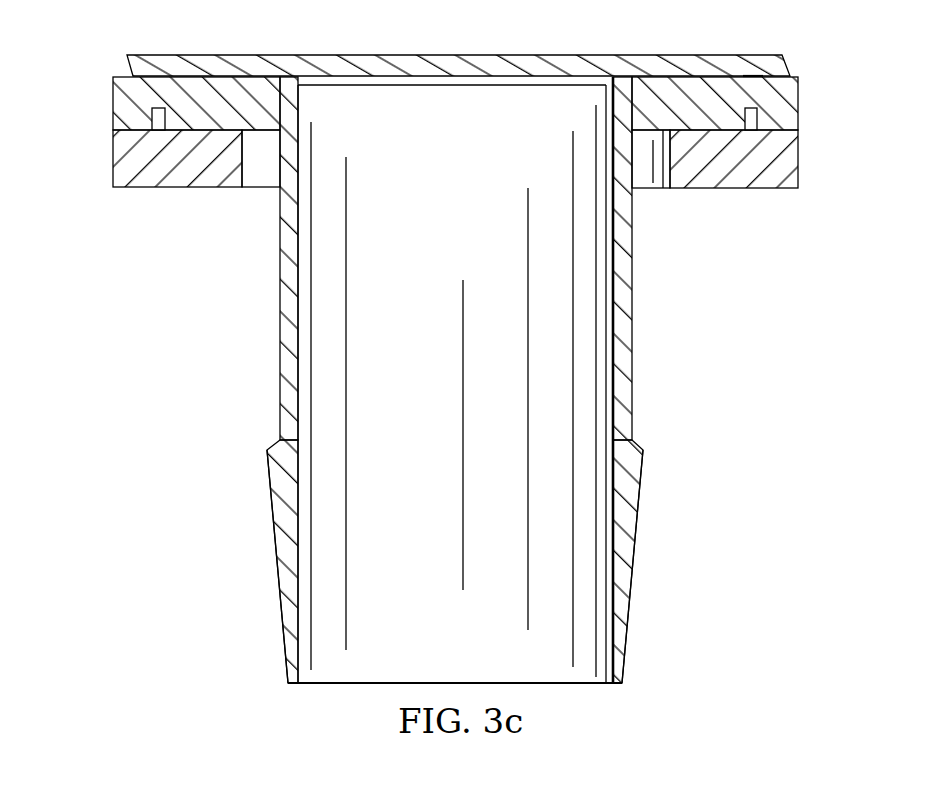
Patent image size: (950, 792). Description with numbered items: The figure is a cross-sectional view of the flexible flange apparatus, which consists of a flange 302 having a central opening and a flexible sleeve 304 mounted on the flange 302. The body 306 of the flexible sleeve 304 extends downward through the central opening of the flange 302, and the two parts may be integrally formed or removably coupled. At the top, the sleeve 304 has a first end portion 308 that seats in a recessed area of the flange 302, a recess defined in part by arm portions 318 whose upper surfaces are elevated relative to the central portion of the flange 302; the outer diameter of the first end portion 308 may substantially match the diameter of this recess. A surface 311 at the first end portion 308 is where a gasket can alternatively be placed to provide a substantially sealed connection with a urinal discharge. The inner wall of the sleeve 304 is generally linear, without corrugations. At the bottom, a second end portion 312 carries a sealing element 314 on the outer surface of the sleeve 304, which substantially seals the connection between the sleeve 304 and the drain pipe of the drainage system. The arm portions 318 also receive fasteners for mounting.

The flange 302 is at (100, 181).
The flexible sleeve 304 is at (646, 245).
The body 306 is at (620, 333).
The first end portion 308 is at (318, 55).
The surface 311 is at (794, 74).
The second end portion 312 is at (642, 588).
The sealing element 314 is at (630, 515).
The arm portions 318 is at (113, 147).